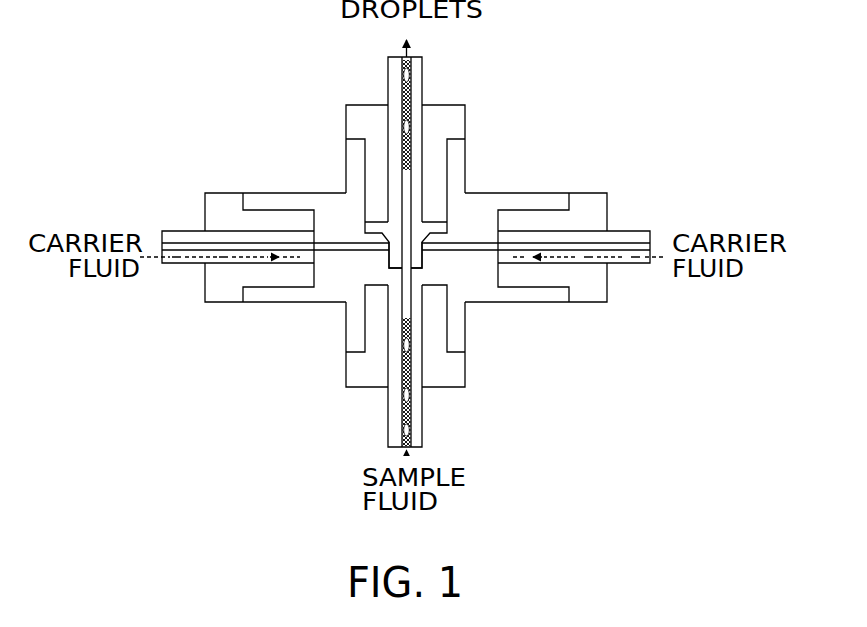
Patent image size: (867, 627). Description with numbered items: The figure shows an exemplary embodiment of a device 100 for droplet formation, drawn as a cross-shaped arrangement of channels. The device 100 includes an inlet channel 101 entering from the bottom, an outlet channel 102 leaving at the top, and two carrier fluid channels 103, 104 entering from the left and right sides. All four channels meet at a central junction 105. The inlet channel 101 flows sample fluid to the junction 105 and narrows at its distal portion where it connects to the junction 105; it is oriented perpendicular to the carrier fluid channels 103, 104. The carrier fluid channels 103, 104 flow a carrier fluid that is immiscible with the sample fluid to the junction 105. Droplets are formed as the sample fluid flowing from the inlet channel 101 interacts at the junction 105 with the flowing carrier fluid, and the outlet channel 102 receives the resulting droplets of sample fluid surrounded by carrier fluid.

The device 100 is at (637, 57).
The inlet channel 101 is at (402, 415).
The outlet channel 102 is at (402, 80).
The carrier fluid channel 103 is at (180, 243).
The carrier fluid channel 104 is at (632, 243).
The junction 105 is at (424, 261).